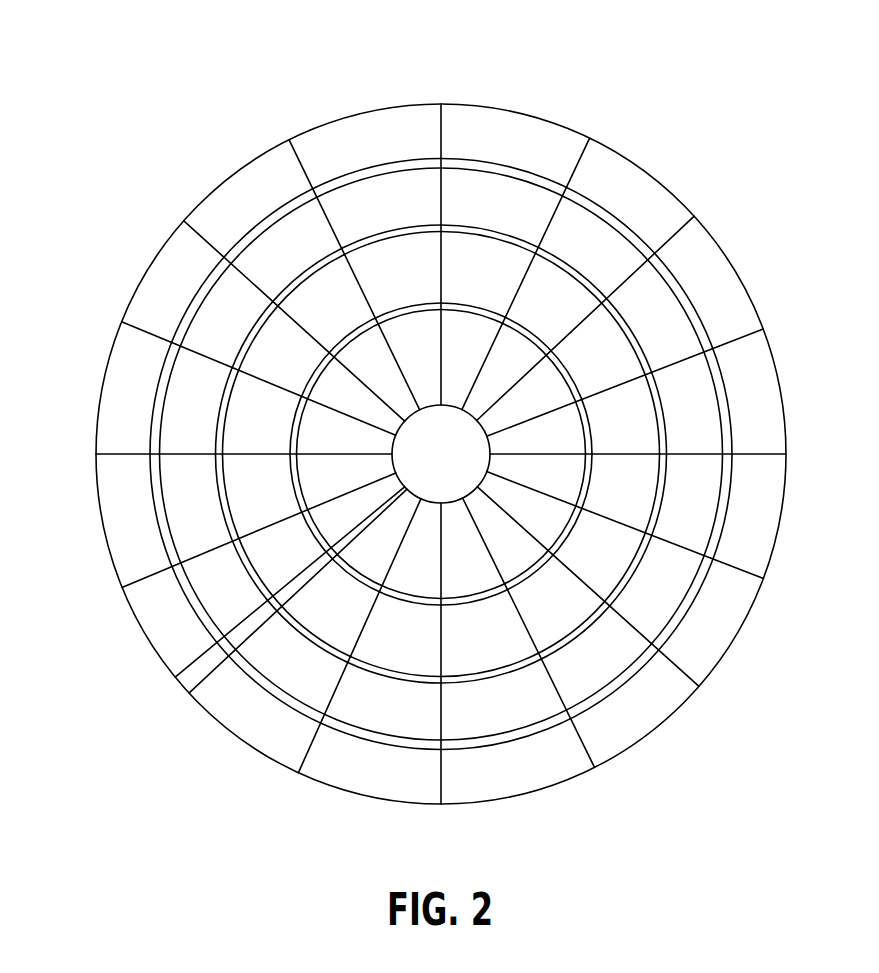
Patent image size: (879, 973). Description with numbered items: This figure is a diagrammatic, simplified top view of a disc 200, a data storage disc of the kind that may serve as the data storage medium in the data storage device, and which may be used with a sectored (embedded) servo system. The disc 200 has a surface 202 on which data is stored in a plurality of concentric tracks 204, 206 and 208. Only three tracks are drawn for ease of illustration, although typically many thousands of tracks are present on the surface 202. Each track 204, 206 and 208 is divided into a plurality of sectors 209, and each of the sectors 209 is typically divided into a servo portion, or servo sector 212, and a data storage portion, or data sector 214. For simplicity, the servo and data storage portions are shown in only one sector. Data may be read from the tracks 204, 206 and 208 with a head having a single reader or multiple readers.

The disc 200 is at (760, 75).
The surface 202 is at (642, 197).
The concentric track 204 is at (405, 607).
The concentric track 206 is at (405, 683).
The concentric track 208 is at (275, 703).
The sector 209 is at (181, 696).
The servo sector 212 is at (182, 699).
The data sector 214 is at (150, 607).